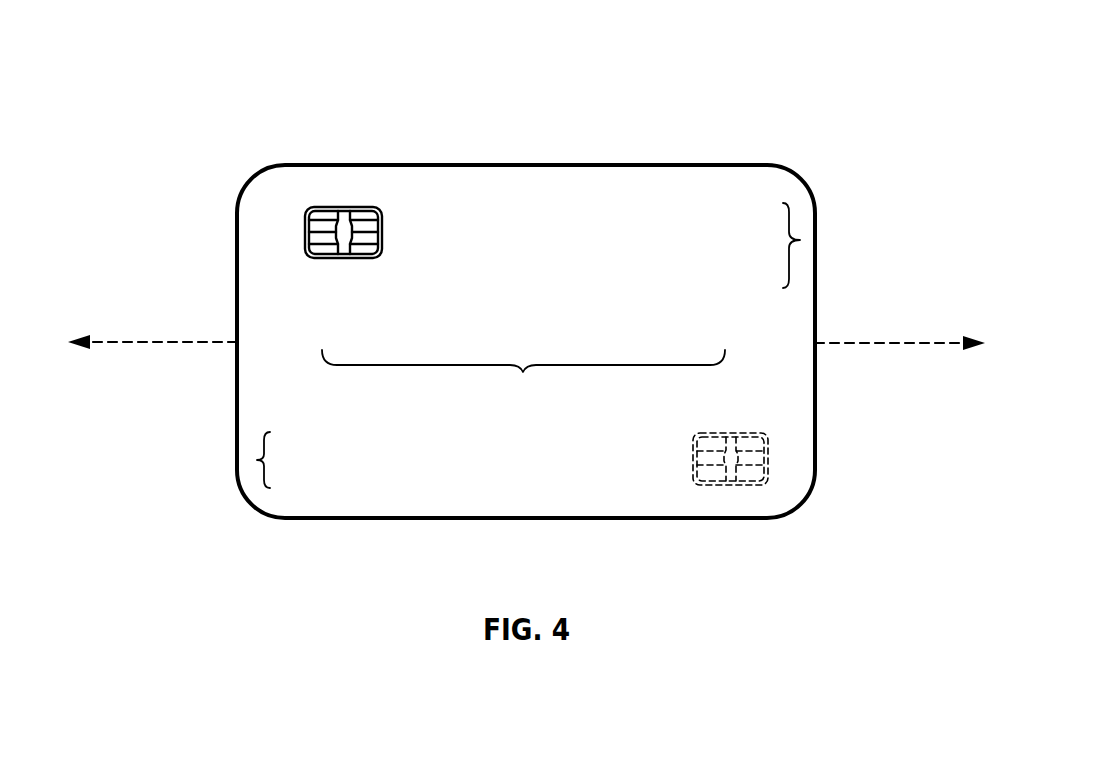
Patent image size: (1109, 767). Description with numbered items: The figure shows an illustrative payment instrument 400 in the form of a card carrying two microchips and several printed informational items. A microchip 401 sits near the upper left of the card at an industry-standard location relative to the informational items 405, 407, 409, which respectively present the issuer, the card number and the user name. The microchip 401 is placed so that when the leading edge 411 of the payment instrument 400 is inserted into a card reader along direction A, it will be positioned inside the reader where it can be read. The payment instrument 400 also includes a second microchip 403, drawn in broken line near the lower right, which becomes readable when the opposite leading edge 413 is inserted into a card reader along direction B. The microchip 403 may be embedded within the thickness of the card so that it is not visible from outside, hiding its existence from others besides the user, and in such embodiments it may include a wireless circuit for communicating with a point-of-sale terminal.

The payment instrument 400 is at (768, 50).
The microchip 401 is at (333, 207).
The microchip 403 is at (768, 463).
The informational item (issuer) 405 is at (800, 240).
The informational item (card number) 407 is at (523, 372).
The informational item (user name) 409 is at (258, 460).
The leading edge 411 is at (237, 415).
The leading edge 413 is at (815, 392).